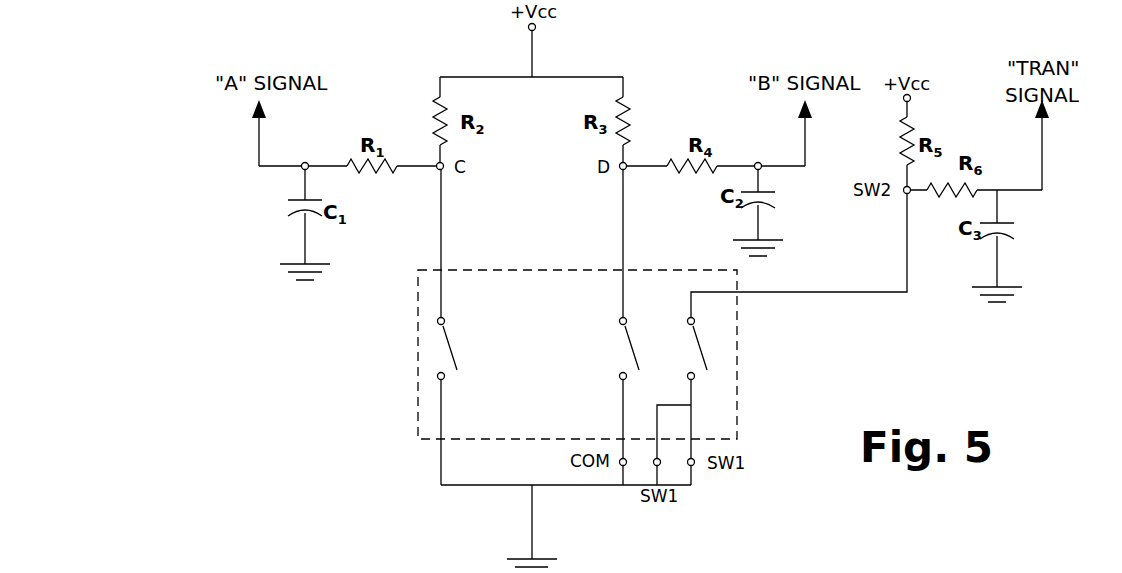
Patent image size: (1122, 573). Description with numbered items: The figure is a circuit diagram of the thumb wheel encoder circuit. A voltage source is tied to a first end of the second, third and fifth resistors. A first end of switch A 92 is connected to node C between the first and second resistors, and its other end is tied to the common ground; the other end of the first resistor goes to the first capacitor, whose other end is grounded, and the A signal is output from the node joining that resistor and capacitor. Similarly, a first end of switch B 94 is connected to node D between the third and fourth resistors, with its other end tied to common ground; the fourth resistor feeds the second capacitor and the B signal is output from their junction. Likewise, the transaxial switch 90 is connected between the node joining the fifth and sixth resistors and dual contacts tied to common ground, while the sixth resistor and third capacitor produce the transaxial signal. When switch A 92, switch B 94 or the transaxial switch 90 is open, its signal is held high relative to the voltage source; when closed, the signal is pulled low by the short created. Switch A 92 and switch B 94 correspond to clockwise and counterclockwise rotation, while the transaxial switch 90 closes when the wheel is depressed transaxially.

The transaxial switch 90 is at (676, 313).
The switch A 92 is at (482, 359).
The switch B 94 is at (606, 342).